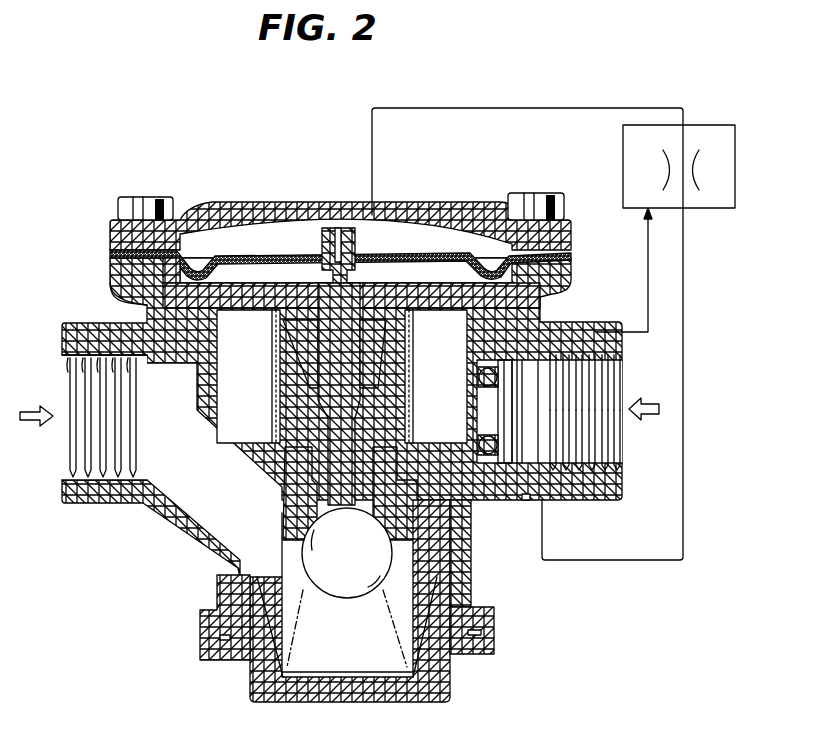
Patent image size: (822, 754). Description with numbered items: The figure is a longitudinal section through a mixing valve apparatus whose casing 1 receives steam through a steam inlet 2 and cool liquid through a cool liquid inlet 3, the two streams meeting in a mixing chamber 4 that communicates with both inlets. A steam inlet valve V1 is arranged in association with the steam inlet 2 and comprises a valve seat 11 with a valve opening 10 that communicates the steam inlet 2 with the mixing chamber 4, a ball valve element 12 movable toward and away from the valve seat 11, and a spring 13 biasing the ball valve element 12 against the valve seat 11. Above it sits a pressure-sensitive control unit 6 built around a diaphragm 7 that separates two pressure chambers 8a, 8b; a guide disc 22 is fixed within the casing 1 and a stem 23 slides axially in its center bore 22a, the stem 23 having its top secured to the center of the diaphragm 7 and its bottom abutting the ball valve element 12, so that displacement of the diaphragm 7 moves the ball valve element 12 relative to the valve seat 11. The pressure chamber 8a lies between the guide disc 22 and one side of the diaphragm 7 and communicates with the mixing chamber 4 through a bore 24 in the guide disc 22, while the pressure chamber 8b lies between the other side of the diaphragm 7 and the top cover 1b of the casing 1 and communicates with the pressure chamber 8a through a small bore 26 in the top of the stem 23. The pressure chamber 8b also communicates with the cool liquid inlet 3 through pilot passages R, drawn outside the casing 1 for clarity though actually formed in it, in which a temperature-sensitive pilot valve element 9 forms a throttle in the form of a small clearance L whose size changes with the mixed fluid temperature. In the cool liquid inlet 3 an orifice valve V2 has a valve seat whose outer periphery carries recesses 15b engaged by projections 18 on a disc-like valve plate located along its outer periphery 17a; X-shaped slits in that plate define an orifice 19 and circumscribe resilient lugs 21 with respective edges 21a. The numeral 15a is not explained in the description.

The casing 1 is at (115, 333).
The top cover 1b is at (193, 200).
The steam inlet 2 is at (88, 445).
The cool liquid inlet 3 is at (625, 363).
The mixing chamber 4 is at (544, 297).
The pressure-sensitive control unit 6 is at (340, 192).
The diaphragm 7 is at (260, 247).
The pressure chamber 8a is at (238, 273).
The pressure chamber 8b is at (217, 238).
The temperature-sensitive pilot valve element 9 is at (694, 125).
The valve opening 10 is at (420, 528).
The valve seat 11 is at (435, 560).
The ball valve element 12 is at (437, 580).
The spring 13 is at (393, 637).
The outlet thread 15a is at (590, 380).
The recesses 15b is at (590, 443).
The outer periphery 17a is at (528, 502).
The projections 18 is at (520, 323).
The orifice 19 is at (483, 407).
The resilient lugs 21 is at (480, 423).
The edges 21a is at (467, 400).
The guide disc 22 is at (378, 325).
The center bore 22a is at (297, 361).
The stem 23 is at (345, 305).
The bore 24 is at (147, 310).
The small bore 26 is at (337, 227).
The pilot passages R is at (686, 278).
The steam inlet valve V1 is at (430, 575).
The orifice valve V2 is at (598, 323).
The small clearance L is at (658, 163).